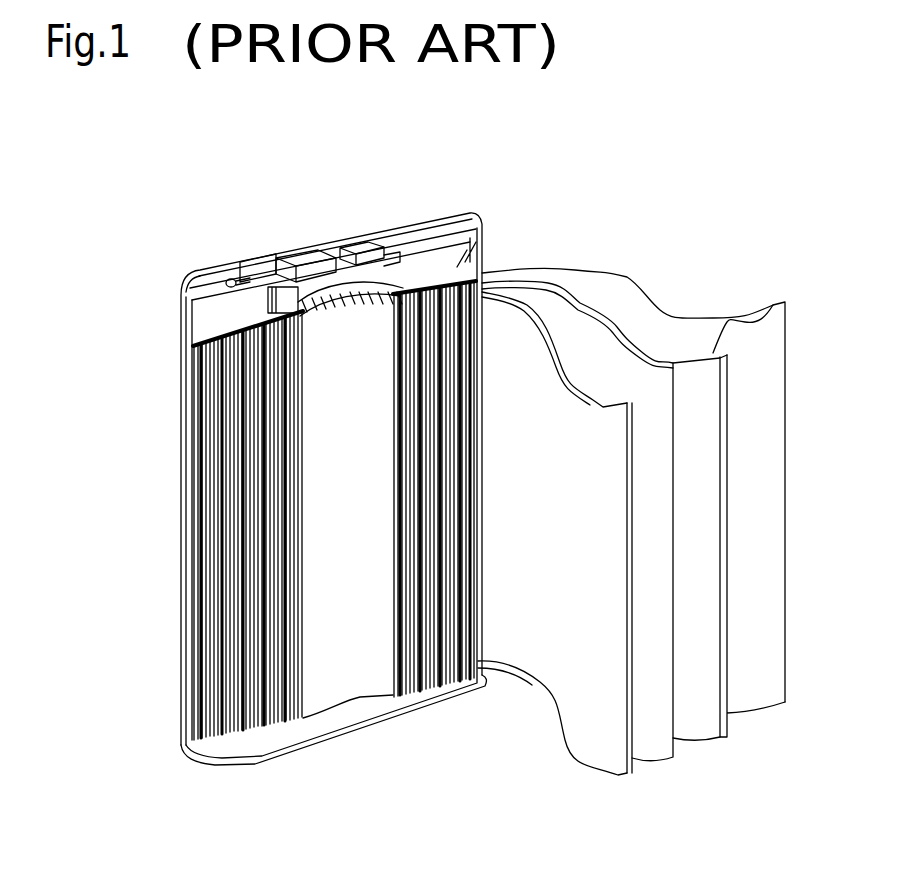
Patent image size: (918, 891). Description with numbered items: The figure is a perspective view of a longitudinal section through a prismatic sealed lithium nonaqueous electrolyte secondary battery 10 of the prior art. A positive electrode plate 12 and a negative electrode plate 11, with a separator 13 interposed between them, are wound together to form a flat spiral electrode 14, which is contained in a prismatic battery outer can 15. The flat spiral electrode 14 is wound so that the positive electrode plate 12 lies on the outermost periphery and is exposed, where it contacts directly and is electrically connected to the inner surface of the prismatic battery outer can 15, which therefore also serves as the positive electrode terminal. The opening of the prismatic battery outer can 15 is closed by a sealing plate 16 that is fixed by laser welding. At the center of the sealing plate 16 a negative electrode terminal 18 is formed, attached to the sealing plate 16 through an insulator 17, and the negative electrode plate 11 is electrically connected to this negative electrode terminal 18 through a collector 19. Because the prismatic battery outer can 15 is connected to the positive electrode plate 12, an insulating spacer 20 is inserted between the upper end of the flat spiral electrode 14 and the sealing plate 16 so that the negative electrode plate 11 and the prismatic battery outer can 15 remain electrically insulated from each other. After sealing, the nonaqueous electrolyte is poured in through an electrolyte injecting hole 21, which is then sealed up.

The sealed secondary battery 10 is at (52, 157).
The negative electrode plate 11 is at (770, 307).
The positive electrode plate 12 is at (603, 407).
The separator 13 is at (650, 300).
The flat spiral electrode 14 is at (203, 517).
The prismatic battery outer can 15 is at (185, 368).
The sealing plate 16 is at (478, 230).
The insulator 17 is at (303, 255).
The negative electrode terminal 18 is at (333, 250).
The collector 19 is at (278, 255).
The insulating spacer 20 is at (484, 243).
The electrolyte injecting hole 21 is at (236, 265).